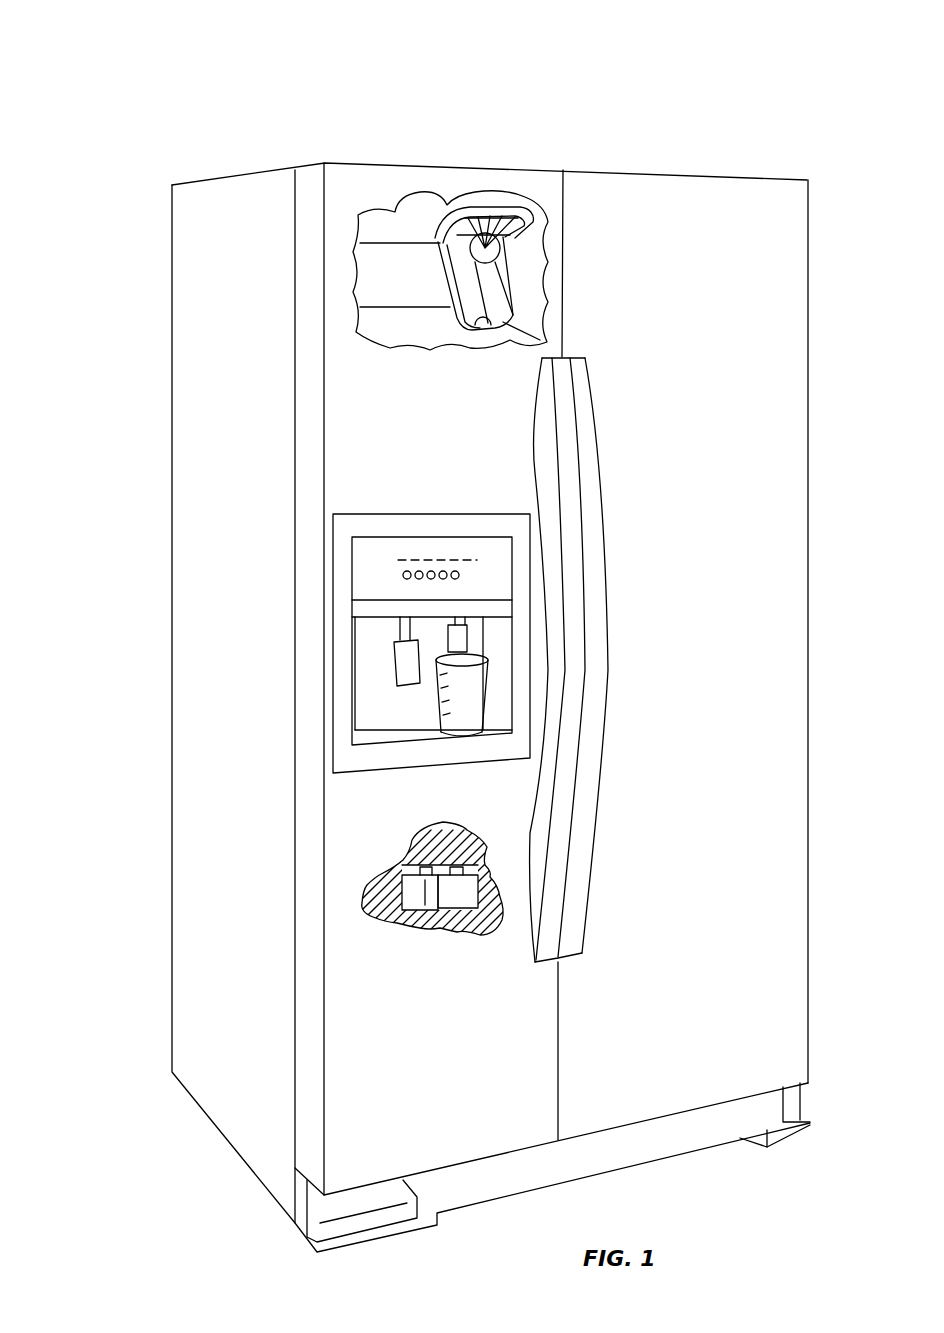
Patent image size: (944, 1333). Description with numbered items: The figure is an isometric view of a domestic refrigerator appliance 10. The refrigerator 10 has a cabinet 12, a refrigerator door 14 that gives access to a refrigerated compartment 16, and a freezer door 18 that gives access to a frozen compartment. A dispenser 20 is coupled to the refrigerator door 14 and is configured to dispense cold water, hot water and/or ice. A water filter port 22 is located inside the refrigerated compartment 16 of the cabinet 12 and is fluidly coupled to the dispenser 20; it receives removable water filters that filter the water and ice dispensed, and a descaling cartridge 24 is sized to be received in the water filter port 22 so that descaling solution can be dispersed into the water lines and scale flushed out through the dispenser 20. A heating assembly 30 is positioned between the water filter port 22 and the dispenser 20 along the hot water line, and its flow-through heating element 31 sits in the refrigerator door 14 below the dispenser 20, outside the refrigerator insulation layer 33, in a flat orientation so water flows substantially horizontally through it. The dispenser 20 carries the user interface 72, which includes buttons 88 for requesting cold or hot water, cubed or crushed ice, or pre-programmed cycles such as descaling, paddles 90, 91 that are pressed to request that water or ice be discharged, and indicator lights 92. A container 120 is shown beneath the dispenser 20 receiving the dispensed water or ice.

The refrigerator appliance 10 is at (133, 88).
The cabinet 12 is at (187, 673).
The refrigerator door 14 is at (340, 855).
The refrigerated compartment 16 is at (397, 223).
The freezer door 18 is at (787, 790).
The dispenser 20 is at (381, 630).
The water filter port 22 is at (460, 205).
The descaling cartridge 24 is at (507, 212).
The heating assembly 30 is at (385, 911).
The flow-through heating element 31 is at (405, 930).
The refrigerator insulation layer 33 is at (472, 925).
The user interface 72 is at (430, 550).
The buttons 88 is at (388, 567).
The paddle 90 is at (410, 670).
The paddle 91 is at (463, 632).
The indicator lights 92 is at (482, 554).
The container / cup 120 is at (462, 717).